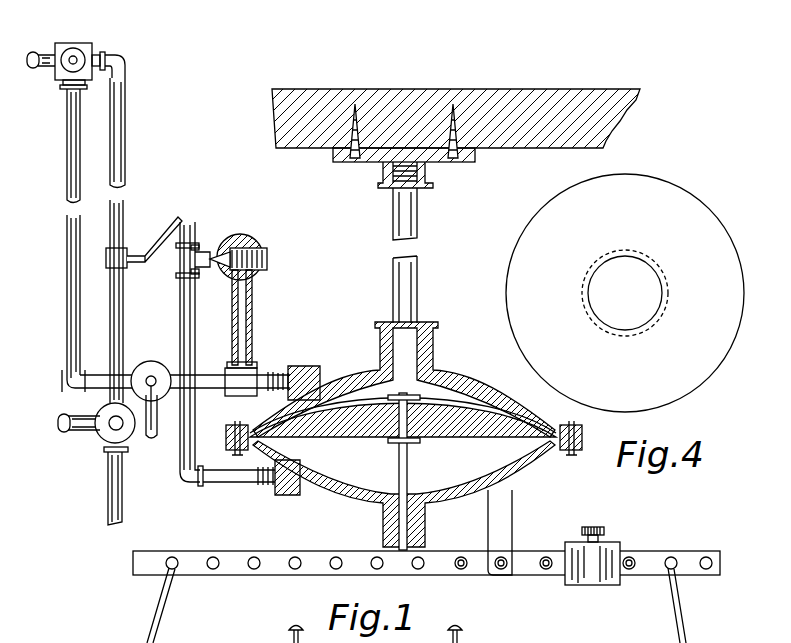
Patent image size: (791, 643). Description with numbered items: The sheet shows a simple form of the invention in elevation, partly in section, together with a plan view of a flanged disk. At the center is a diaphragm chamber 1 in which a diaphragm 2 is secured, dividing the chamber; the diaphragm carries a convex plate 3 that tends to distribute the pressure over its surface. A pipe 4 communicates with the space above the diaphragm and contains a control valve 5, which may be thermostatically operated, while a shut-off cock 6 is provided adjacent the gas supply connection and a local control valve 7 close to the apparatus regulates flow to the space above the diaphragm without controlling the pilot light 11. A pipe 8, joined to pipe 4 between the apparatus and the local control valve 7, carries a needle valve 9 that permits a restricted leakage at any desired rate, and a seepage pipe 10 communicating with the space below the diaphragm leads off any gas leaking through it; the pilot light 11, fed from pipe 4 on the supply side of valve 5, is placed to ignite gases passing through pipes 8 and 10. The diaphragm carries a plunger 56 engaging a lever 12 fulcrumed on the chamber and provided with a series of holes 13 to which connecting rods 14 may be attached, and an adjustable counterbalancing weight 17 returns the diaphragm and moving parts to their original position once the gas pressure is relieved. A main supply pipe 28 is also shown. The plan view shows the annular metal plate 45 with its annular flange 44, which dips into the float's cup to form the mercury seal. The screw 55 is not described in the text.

In FIG. 1, the diaphragm chamber 1 is at (470, 373).
In FIG. 1, the diaphragm 2 is at (375, 400).
In FIG. 1, the convex plate 3 is at (349, 440).
In FIG. 1, the pipe 4 is at (125, 138).
In FIG. 1, the control valve 5 is at (73, 56).
In FIG. 1, the shut-off cock 6 is at (110, 430).
In FIG. 1, the local control valve 7 is at (152, 362).
In FIG. 1, the pipe 8 is at (252, 317).
In FIG. 1, the needle valve 9 is at (244, 234).
In FIG. 1, the seepage pipe 10 is at (243, 484).
In FIG. 1, the pilot light 11 is at (165, 240).
In FIG. 1, the lever 12 is at (240, 567).
In FIG. 1, the holes 13 is at (465, 568).
In FIG. 1, the connecting rods 14 is at (150, 630).
In FIG. 1, the adjustable counterbalancing weight 17 is at (588, 570).
In FIG. 1, the main supply pipe 28 is at (122, 500).
In FIG. 4, the annular flange 44 is at (651, 323).
In FIG. 4, the annular metal plate 45 is at (521, 238).
In FIG. 1, the screw 55 is at (290, 628).
In FIG. 1, the plunger 56 is at (408, 468).